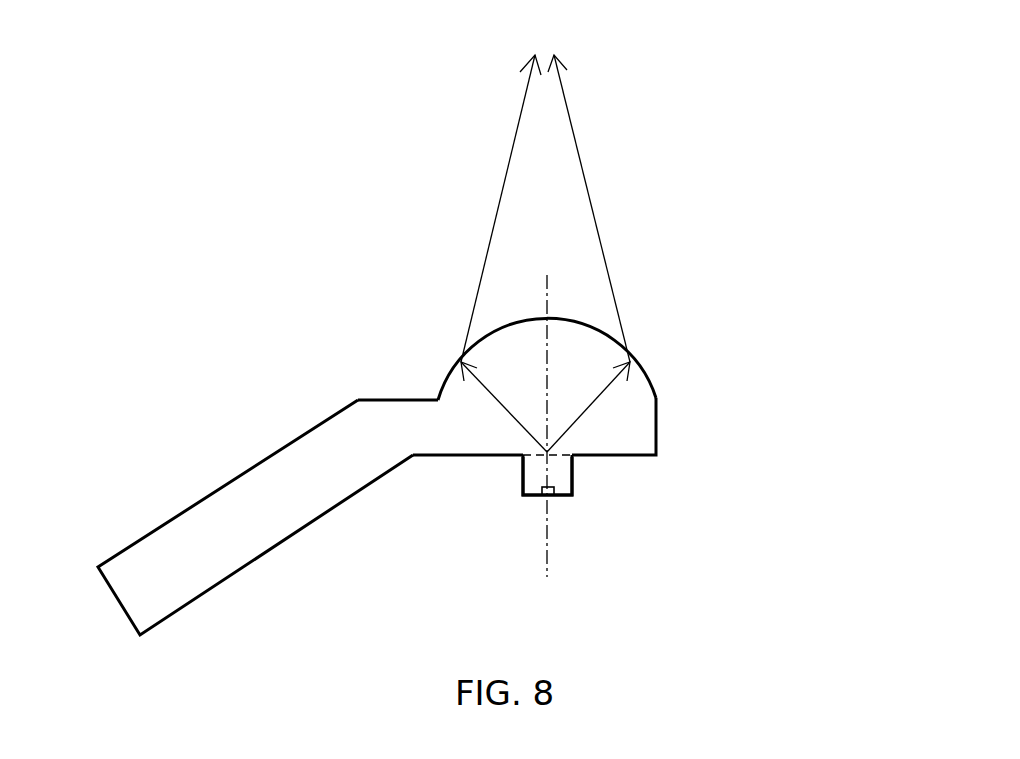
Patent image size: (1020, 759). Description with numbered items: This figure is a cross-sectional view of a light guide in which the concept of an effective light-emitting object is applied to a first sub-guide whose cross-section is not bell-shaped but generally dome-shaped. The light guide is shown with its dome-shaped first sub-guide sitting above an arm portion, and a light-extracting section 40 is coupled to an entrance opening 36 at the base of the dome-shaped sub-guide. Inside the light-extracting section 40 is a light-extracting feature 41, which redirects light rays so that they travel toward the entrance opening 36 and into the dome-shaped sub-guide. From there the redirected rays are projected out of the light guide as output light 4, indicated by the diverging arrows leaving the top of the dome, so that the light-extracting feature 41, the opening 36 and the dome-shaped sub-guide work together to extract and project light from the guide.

The output light 4 is at (512, 112).
The entrance opening 36 is at (543, 456).
The light-extracting section 40 is at (573, 490).
The light-extracting feature 41 is at (552, 497).